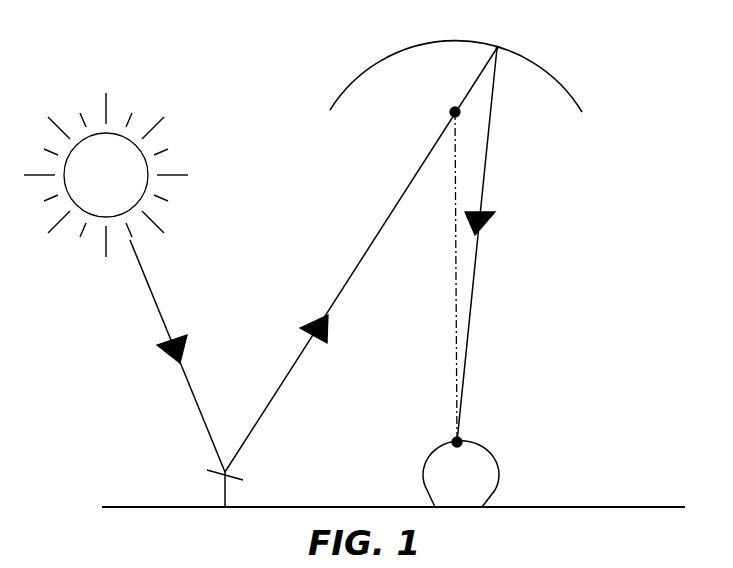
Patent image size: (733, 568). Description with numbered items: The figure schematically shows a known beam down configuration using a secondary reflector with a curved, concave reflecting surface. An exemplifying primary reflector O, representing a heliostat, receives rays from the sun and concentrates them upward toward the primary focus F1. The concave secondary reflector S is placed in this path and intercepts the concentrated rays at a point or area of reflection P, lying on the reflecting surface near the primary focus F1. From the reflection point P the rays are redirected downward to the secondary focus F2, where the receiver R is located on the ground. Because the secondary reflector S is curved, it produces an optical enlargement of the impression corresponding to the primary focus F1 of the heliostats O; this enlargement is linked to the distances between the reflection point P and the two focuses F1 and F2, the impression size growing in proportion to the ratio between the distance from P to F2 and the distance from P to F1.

The secondary reflector S is at (328, 103).
The point or area of reflection P is at (513, 25).
The primary focus F1 is at (431, 94).
The secondary focus F2 is at (485, 422).
The receiver R is at (461, 474).
The primary reflector O is at (210, 471).